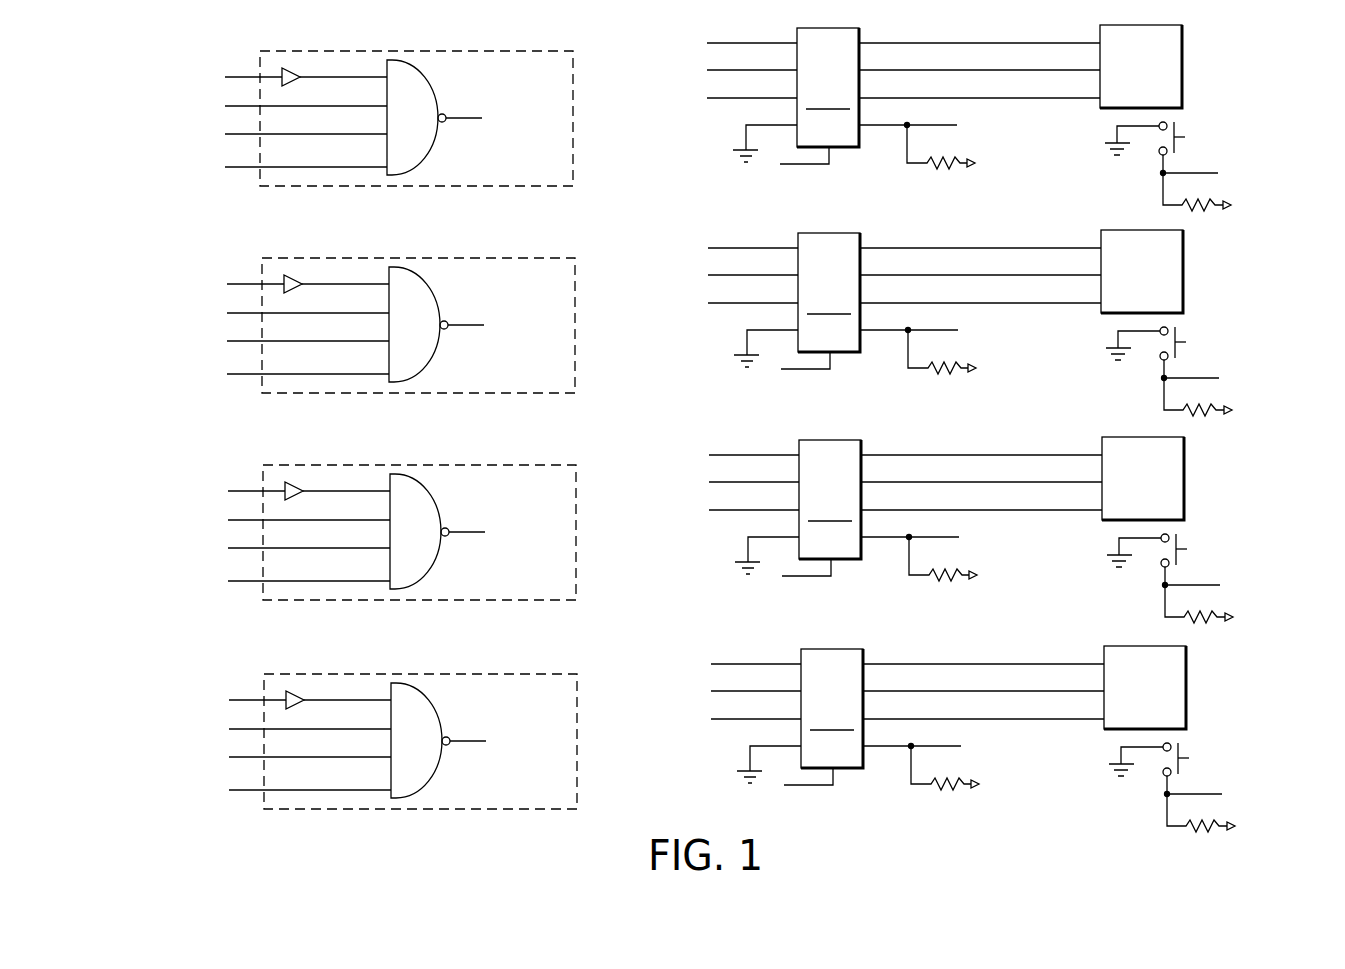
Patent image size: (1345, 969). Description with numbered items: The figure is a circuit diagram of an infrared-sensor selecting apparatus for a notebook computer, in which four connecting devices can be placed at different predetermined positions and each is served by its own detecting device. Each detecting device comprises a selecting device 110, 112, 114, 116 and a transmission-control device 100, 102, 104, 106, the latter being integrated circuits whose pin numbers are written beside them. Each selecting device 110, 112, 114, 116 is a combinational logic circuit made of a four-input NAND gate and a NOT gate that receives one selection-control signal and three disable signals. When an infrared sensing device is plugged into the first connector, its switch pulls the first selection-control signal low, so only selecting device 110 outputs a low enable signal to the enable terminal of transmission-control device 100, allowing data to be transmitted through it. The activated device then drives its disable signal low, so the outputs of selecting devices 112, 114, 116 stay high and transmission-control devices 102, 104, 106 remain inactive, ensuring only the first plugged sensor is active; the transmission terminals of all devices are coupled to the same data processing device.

The transmission-control device 100 is at (803, 28).
The transmission-control device 102 is at (977, 312).
The transmission-control device 104 is at (978, 519).
The transmission-control device 106 is at (980, 728).
The selecting device 110 is at (438, 51).
The selecting device 112 is at (355, 309).
The selecting device 114 is at (356, 516).
The selecting device 116 is at (357, 725).